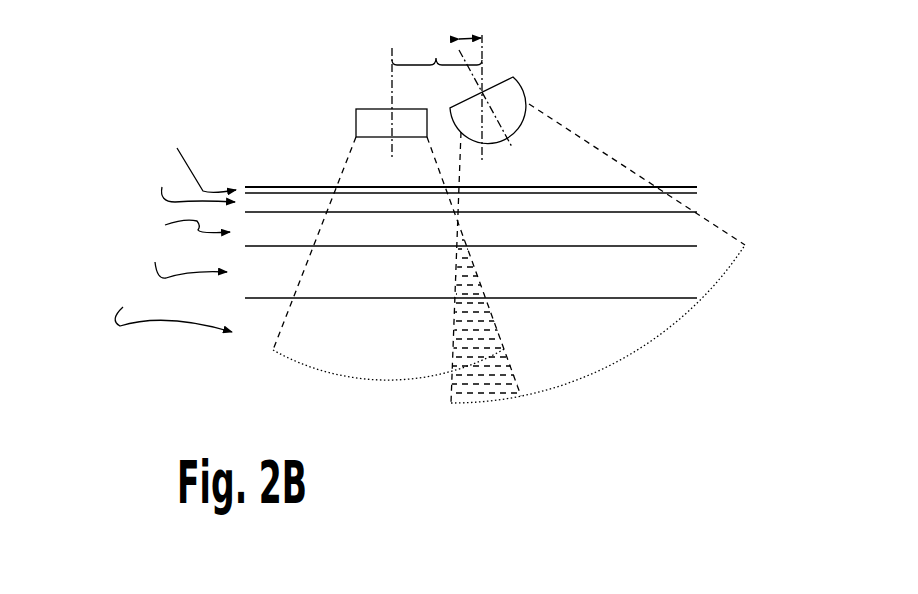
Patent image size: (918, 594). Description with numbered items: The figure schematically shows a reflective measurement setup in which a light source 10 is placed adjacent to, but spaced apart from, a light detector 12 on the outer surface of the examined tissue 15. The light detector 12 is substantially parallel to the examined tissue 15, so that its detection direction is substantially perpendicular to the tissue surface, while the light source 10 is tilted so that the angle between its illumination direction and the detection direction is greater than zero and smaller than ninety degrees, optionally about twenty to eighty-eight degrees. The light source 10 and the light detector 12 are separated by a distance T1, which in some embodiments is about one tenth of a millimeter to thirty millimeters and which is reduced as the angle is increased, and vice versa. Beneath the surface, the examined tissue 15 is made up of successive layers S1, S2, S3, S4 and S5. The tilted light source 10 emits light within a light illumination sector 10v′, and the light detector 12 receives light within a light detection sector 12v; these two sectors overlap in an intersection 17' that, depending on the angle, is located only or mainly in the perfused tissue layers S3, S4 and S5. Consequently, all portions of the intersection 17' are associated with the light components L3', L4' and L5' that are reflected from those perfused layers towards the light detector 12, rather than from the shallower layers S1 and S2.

The light source 10 is at (543, 103).
The light illumination sector 10v′ is at (598, 324).
The light detector 12 is at (356, 124).
The light detection sector 12v is at (389, 383).
The examined tissue 15 is at (297, 186).
The intersection of sectors 17' is at (485, 386).
The distance between light source and light detector T1 is at (437, 47).
The first tissue layer S1 is at (199, 157).
The second tissue layer S2 is at (192, 183).
The third tissue layer S3 is at (182, 227).
The fourth tissue layer S4 is at (184, 259).
The fifth tissue layer S5 is at (171, 307).
The light component reflected from third layer L3' is at (471, 227).
The light component reflected from fourth layer L4' is at (471, 248).
The light component reflected from fifth layer L5' is at (471, 323).